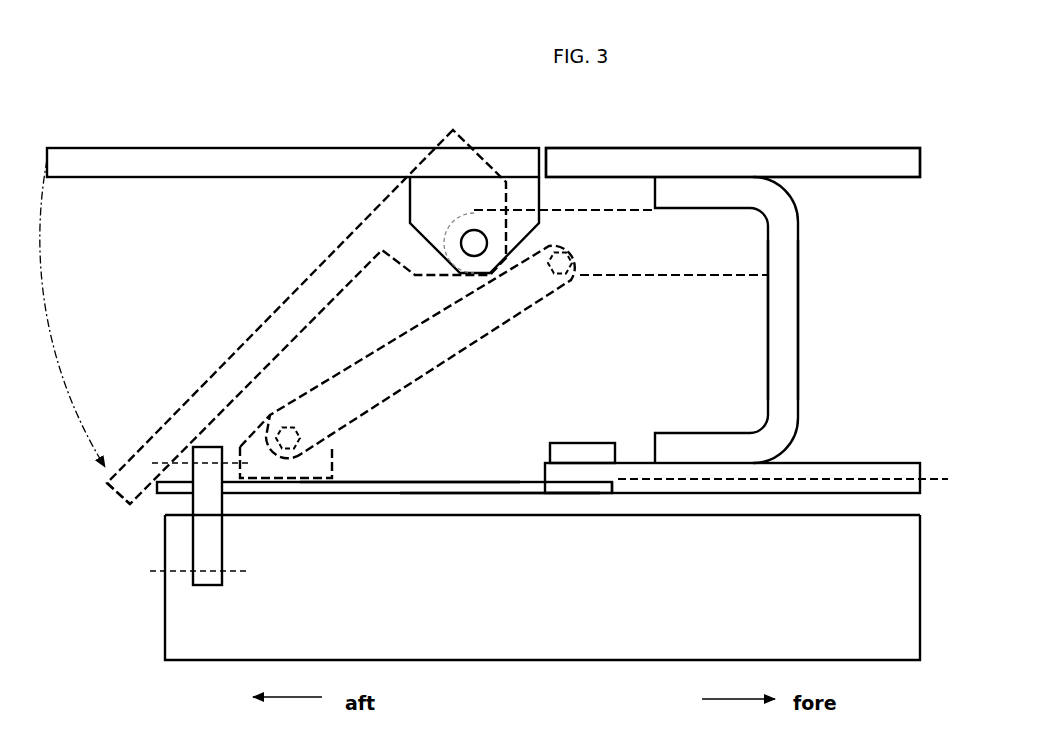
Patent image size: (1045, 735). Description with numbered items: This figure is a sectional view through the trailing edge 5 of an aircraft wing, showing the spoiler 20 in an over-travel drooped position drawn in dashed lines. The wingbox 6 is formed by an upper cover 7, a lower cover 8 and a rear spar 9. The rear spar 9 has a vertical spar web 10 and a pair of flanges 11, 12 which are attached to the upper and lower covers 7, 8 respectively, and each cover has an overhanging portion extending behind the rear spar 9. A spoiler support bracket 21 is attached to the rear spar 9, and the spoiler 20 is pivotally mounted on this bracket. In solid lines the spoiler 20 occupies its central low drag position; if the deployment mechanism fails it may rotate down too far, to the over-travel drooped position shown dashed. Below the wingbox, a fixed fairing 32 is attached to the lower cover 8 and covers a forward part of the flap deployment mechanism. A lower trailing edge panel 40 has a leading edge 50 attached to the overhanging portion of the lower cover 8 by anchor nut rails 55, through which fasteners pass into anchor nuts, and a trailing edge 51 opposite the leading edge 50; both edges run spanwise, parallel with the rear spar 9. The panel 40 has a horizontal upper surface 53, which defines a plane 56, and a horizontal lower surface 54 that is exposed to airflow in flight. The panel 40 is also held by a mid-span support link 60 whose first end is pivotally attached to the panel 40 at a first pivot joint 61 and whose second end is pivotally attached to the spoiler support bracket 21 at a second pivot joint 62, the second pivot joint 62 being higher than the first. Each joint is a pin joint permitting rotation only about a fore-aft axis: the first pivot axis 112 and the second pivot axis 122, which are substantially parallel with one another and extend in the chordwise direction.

The trailing edge 5 is at (390, 102).
The wingbox 6 is at (790, 113).
The upper cover 7 is at (805, 157).
The lower cover 8 is at (820, 482).
The rear spar 9 is at (813, 320).
The vertical spar web 10 is at (779, 369).
The flange 11 is at (683, 432).
The flange 12 is at (708, 195).
The spoiler 20 is at (218, 165).
The spoiler support bracket 21 is at (672, 263).
The fixed fairing 32 is at (615, 625).
The panel 40 is at (438, 486).
The leading edge 50 is at (613, 488).
The trailing edge 51 is at (148, 487).
The upper surface 53 is at (488, 481).
The lower surface 54 is at (372, 496).
The anchor nut rail 55 is at (573, 443).
The plane 56 is at (931, 470).
The mid-span support link 60 is at (398, 357).
The first pivot joint 61 is at (244, 423).
The second pivot joint 62 is at (583, 285).
The first pivot axis 112 is at (233, 465).
The second pivot axis 122 is at (158, 572).